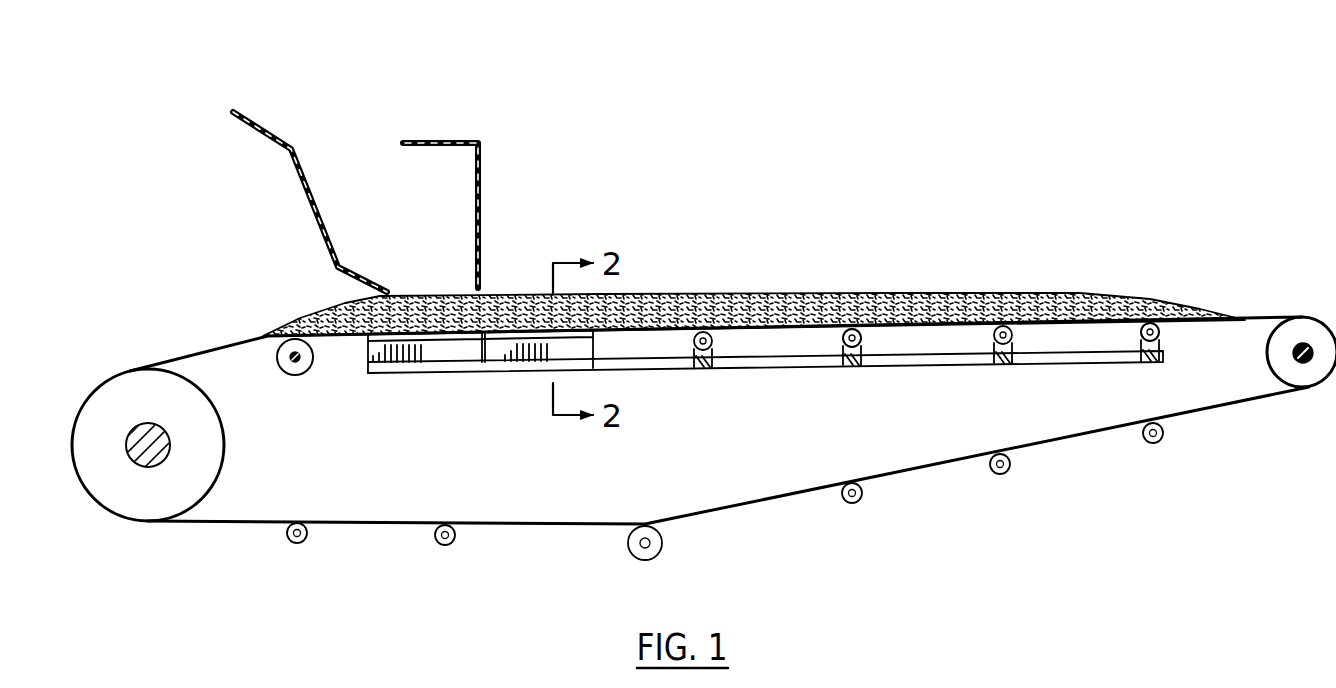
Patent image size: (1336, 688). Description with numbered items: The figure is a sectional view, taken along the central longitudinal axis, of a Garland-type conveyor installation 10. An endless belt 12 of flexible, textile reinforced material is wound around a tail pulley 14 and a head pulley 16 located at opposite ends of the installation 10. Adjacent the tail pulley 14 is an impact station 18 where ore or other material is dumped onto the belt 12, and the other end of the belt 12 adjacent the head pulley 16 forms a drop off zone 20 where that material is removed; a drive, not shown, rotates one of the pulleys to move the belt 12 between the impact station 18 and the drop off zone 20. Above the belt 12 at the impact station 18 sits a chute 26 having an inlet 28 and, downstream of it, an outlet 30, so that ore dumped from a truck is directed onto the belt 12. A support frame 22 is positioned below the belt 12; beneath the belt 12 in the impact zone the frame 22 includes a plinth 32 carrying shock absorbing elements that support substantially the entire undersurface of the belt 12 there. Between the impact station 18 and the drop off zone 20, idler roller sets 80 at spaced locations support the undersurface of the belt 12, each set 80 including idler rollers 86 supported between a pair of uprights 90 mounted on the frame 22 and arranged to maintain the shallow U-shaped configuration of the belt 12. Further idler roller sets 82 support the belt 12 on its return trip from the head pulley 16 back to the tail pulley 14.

The conveyor installation 10 is at (704, 327).
The endless belt 12 is at (833, 300).
The tail pulley 14 is at (135, 487).
The head pulley 16 is at (1308, 372).
The impact station 18 is at (623, 233).
The drop off zone 20 is at (1210, 268).
The support frame 22 is at (785, 363).
The chute 26 is at (467, 127).
The inlet 28 is at (341, 133).
The outlet 30 is at (445, 272).
The plinth 32 is at (430, 372).
The idler roller set 80 is at (868, 342).
The idler roller set 82 is at (300, 543).
The idler roller 86 is at (692, 340).
The upright 90 is at (713, 352).